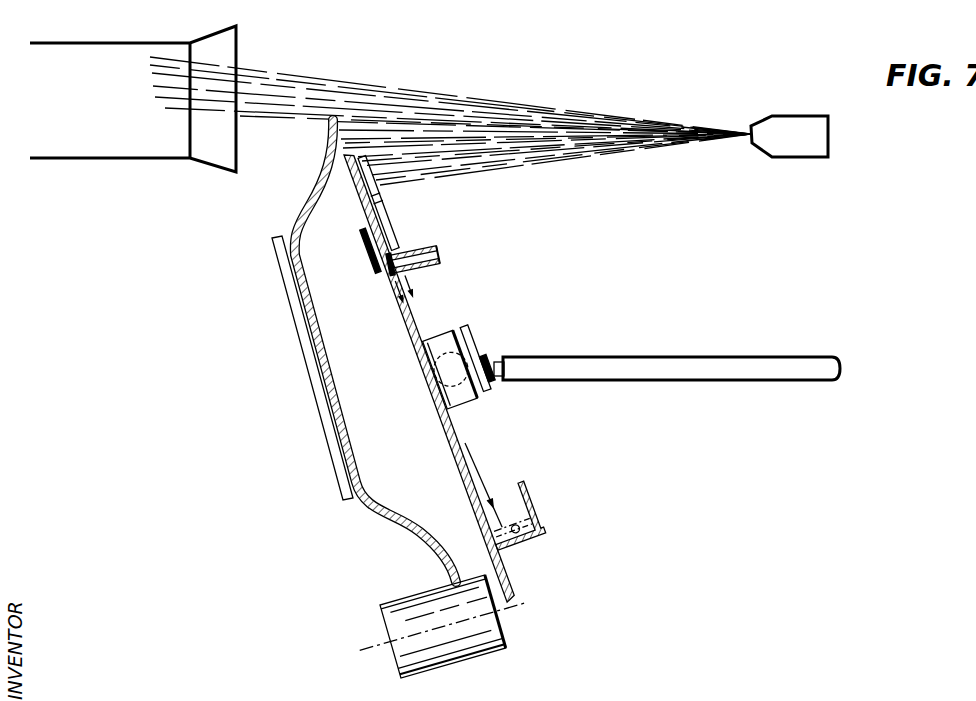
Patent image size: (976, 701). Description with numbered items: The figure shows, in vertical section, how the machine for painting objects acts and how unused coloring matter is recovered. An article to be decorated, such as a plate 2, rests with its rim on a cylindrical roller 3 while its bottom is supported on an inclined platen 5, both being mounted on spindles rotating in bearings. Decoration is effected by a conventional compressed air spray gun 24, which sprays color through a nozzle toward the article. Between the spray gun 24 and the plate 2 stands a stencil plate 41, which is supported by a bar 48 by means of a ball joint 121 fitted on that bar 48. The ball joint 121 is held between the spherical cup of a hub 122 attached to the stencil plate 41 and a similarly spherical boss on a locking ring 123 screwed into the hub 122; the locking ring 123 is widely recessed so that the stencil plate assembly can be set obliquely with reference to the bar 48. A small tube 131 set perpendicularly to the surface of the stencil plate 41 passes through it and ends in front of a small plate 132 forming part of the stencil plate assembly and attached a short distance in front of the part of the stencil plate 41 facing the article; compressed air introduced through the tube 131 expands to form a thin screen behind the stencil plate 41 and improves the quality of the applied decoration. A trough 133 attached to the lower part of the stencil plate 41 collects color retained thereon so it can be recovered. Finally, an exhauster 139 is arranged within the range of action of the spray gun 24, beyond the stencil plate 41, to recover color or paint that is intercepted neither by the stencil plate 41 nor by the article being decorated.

The exhauster 139 is at (106, 135).
The spray gun 24 is at (805, 140).
The plate 2 is at (320, 189).
The inclined platen 5 is at (285, 284).
The stencil plate 41 is at (408, 312).
The small plate 132 is at (366, 256).
The small tube 131 is at (433, 245).
The hub 122 is at (442, 339).
The ball joint 121 is at (477, 346).
The locking ring 123 is at (494, 388).
The bar 48 is at (620, 367).
The trough 133 is at (522, 488).
The cylindrical roller 3 is at (477, 635).